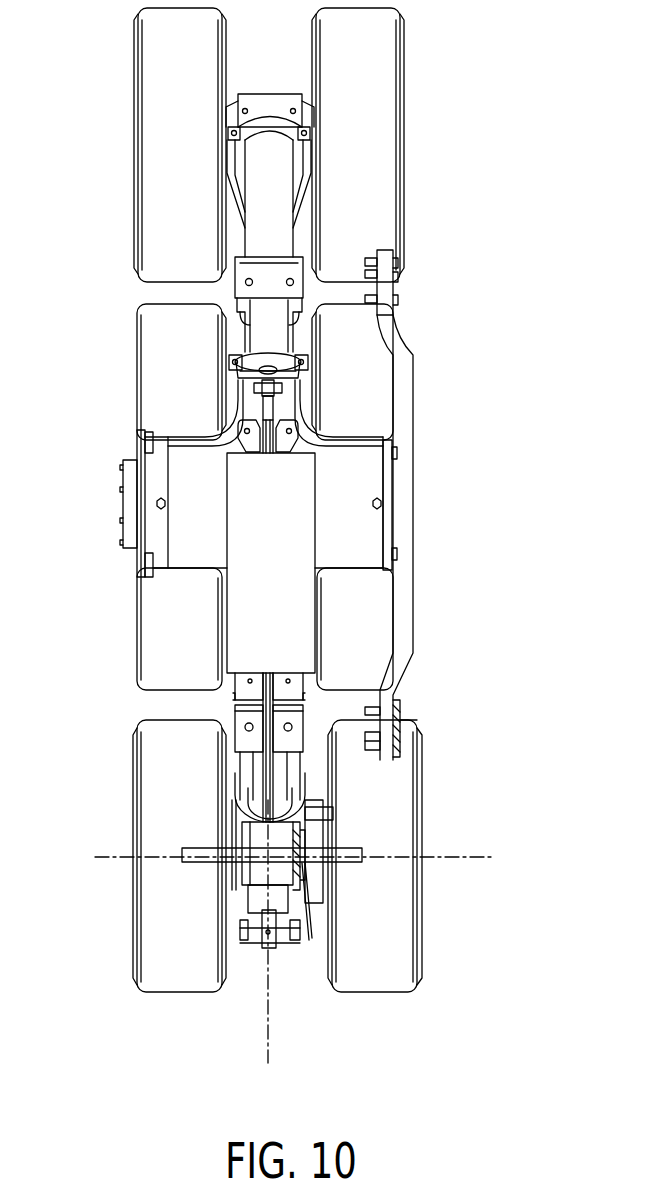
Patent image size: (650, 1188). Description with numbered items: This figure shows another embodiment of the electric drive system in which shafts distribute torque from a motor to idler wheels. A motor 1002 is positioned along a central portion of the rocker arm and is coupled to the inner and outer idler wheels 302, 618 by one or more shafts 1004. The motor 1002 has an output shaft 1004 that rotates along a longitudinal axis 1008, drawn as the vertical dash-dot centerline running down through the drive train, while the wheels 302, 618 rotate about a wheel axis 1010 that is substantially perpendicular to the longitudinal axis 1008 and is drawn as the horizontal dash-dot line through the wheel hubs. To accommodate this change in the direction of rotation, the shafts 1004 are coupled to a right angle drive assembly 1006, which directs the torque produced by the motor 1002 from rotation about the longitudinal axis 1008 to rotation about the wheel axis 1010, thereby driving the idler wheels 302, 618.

The motor 1002 is at (283, 575).
The shaft 1004 is at (315, 797).
The right angle drive assembly 1006 is at (283, 870).
The outer idler wheel 618 is at (408, 984).
The inner idler wheel 302 is at (137, 753).
The wheel axis 1010 is at (497, 856).
The longitudinal axis 1008 is at (270, 1027).